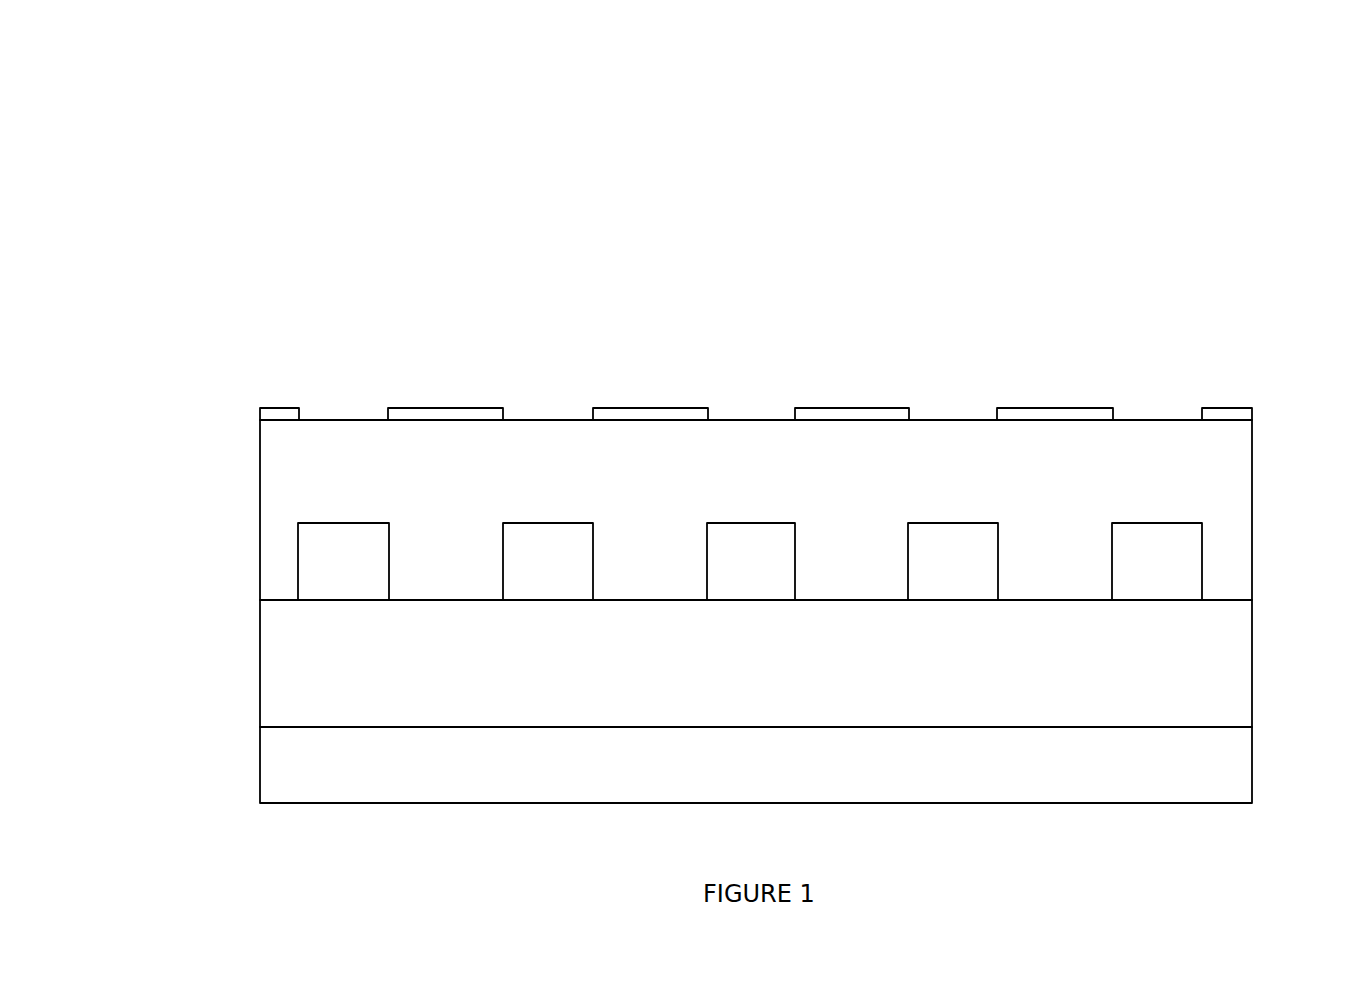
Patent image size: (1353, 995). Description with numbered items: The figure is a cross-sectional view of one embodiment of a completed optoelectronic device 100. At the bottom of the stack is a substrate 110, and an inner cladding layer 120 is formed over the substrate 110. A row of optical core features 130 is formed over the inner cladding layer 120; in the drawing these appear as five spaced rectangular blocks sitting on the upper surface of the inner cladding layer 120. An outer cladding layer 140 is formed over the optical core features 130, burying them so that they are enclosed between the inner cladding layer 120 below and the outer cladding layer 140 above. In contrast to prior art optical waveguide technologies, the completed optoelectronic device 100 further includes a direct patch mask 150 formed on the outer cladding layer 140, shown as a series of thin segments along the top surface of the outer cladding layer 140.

The completed optoelectronic device 100 is at (170, 78).
The substrate 110 is at (260, 778).
The inner cladding layer 120 is at (260, 677).
The optical core features 130 is at (1202, 550).
The outer cladding layer 140 is at (1252, 472).
The direct patch mask 150 is at (1252, 418).